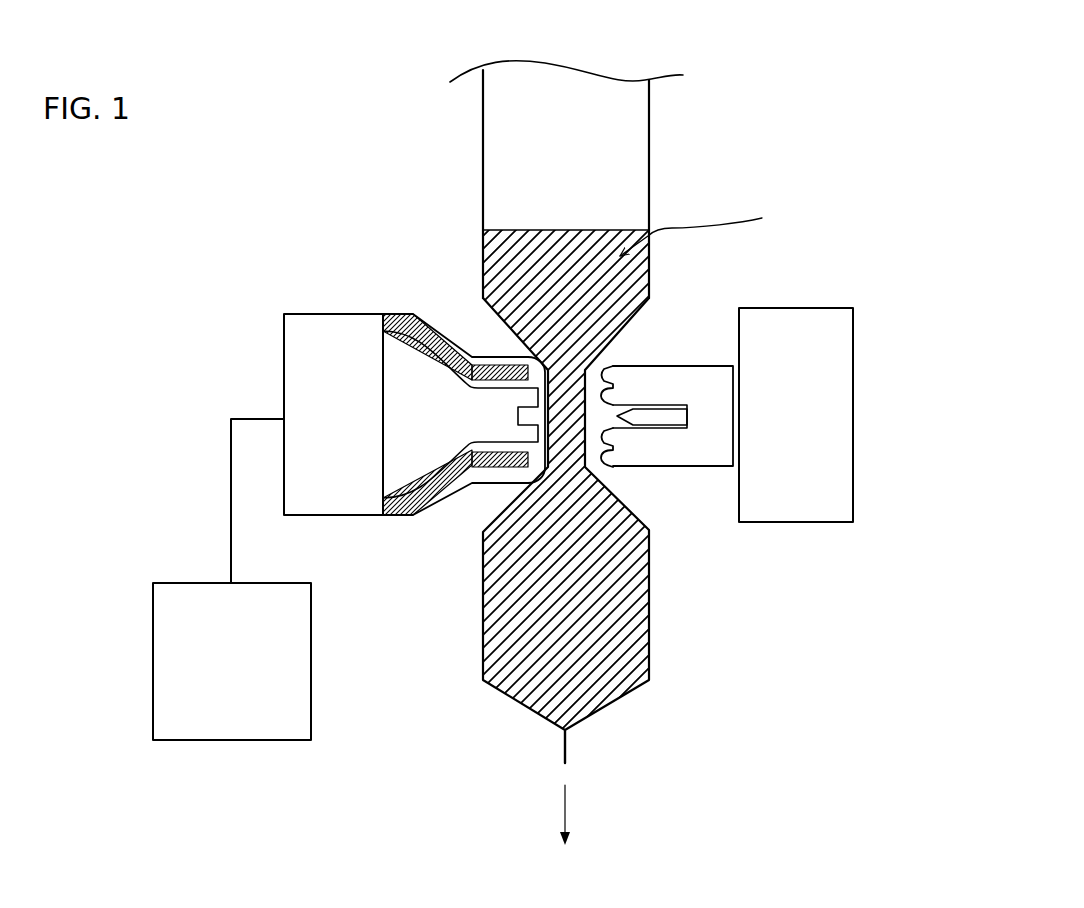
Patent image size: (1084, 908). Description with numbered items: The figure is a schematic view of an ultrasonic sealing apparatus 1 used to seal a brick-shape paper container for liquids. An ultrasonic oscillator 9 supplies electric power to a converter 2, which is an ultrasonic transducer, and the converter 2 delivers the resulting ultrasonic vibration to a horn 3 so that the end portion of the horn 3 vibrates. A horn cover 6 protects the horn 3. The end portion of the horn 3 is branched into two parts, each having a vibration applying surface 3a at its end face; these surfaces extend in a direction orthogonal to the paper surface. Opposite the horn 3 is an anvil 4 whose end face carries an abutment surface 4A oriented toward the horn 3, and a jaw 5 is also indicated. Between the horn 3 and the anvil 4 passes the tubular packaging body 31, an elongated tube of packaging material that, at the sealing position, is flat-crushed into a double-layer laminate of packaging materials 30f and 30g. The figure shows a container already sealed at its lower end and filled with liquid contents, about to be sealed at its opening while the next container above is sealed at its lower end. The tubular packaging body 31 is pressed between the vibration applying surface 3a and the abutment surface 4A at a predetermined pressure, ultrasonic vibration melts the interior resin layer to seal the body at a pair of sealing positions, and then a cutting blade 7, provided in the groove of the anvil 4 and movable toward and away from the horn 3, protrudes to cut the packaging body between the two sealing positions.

The ultrasonic sealing apparatus 1 is at (345, 200).
The converter 2 is at (328, 438).
The horn 3 is at (408, 442).
The vibration applying surface 3a is at (532, 362).
The anvil 4 is at (680, 380).
The abutment surface 4A is at (608, 362).
The jaw 5 is at (823, 407).
The horn cover 6 is at (452, 347).
The cutting blade 7 is at (650, 417).
The ultrasonic oscillator 9 is at (280, 697).
The packaging material 30f is at (483, 130).
The packaging material 30g is at (651, 173).
The tubular packaging body 31 is at (652, 121).